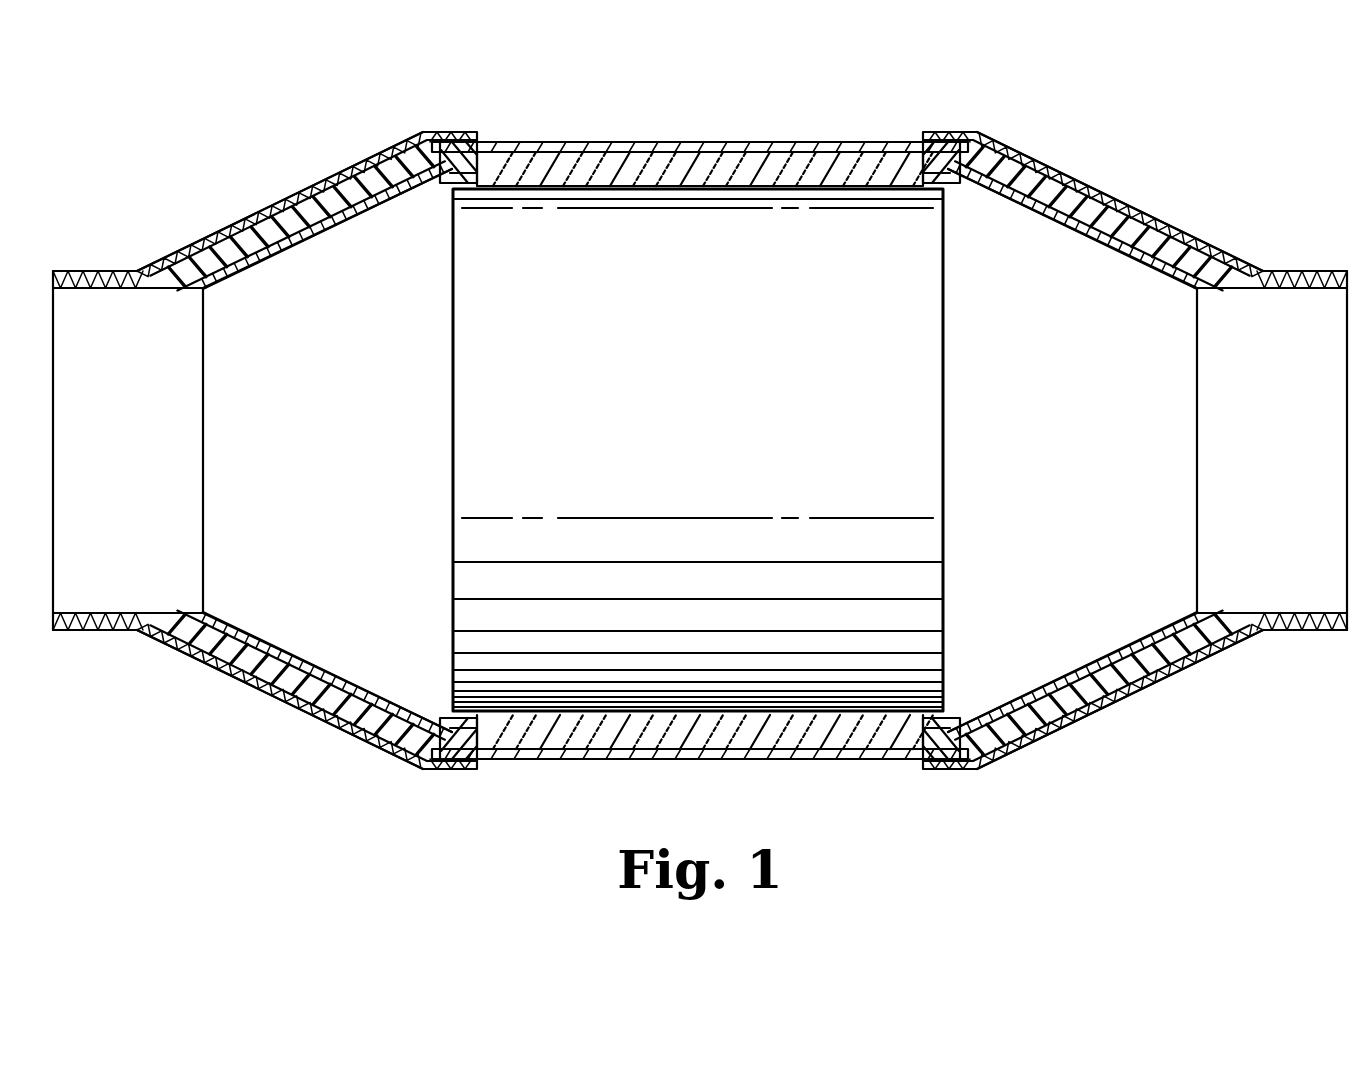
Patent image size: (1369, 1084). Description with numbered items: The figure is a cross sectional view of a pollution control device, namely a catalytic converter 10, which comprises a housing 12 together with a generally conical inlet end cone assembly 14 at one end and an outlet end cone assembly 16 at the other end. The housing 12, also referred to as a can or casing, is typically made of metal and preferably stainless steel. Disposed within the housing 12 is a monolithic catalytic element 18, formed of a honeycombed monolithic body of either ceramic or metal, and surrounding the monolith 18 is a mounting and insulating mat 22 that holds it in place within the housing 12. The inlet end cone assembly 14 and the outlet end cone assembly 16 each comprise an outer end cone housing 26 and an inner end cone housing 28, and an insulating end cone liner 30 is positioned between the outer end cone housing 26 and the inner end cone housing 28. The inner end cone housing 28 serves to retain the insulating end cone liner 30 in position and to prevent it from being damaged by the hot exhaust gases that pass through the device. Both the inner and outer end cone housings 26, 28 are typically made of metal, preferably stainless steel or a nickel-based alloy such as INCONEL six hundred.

The catalytic converter 10 is at (283, 732).
The housing 12 is at (568, 144).
The inlet end cone assembly 14 is at (236, 218).
The outlet end cone assembly 16 is at (1192, 230).
The monolithic catalytic element 18 is at (673, 437).
The mounting and insulating mat 22 is at (713, 168).
The outer end cone housing 26 is at (357, 164).
The inner end cone housing 28 is at (360, 212).
The insulating end cone liner 30 is at (293, 194).